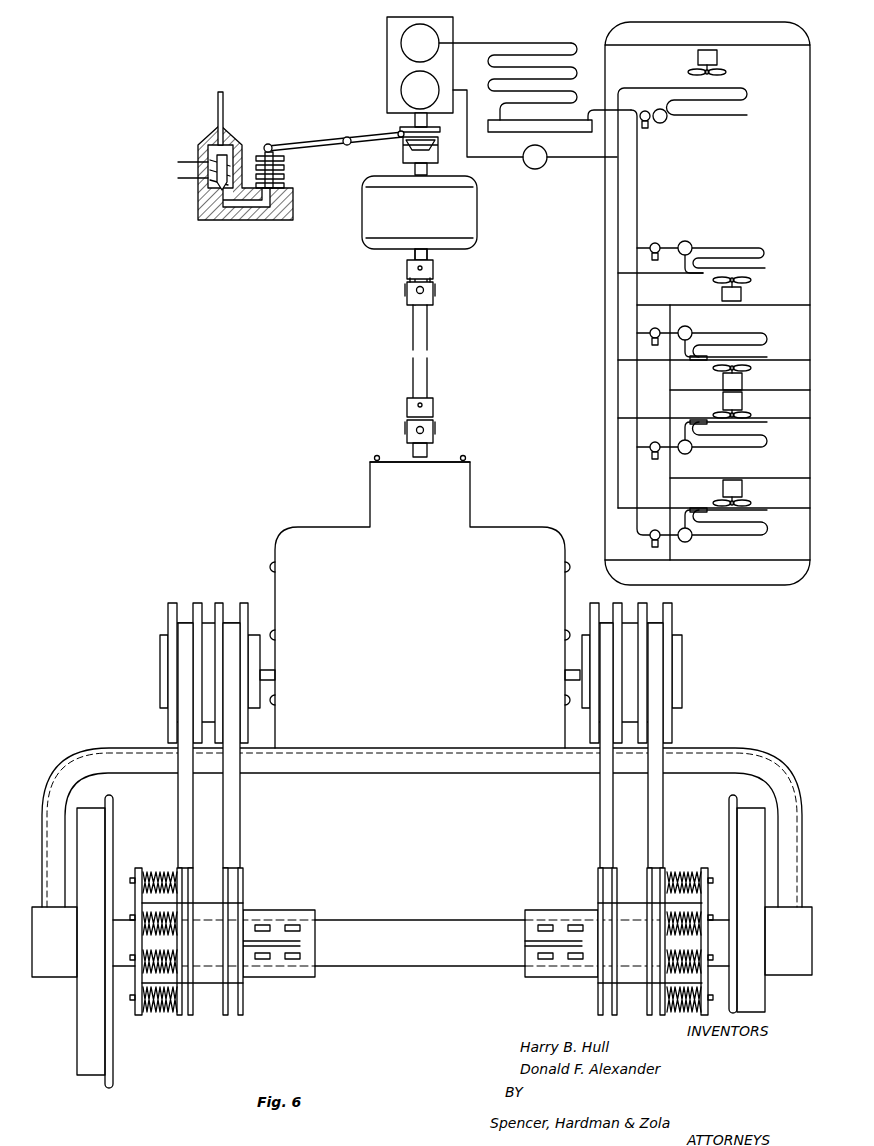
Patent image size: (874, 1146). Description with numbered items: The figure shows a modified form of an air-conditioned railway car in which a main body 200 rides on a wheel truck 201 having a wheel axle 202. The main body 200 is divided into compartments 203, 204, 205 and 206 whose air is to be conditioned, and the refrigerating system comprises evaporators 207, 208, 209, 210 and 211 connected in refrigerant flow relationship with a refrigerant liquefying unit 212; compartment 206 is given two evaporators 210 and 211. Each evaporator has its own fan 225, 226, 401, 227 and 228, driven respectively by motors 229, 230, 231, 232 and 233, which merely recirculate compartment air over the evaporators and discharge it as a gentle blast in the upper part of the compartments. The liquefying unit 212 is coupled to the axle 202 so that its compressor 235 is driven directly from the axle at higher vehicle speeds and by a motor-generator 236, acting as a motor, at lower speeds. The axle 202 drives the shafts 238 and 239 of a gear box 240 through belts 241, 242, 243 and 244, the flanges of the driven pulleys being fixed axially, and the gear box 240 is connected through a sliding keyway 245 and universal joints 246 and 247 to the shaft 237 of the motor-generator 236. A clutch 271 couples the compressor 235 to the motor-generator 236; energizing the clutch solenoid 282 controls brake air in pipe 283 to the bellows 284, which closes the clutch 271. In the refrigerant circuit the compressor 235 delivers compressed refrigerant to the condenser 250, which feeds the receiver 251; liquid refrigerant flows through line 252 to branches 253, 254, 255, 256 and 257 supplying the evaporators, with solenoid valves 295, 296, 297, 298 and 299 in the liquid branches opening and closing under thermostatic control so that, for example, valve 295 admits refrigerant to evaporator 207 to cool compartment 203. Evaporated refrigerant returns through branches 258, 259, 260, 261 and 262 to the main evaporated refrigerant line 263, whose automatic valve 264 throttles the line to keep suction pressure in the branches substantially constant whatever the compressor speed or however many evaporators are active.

The main body 200 is at (605, 300).
The wheel truck 201 is at (448, 768).
The wheel axle 202 is at (440, 912).
The compartment 203 is at (714, 503).
The compartment 204 is at (714, 418).
The compartment 205 is at (714, 432).
The compartment 206 is at (723, 245).
The evaporator 207 is at (768, 510).
The evaporator 208 is at (768, 422).
The evaporator 209 is at (755, 333).
The evaporator 210 is at (742, 247).
The evaporator 211 is at (747, 115).
The refrigerant liquefying unit 212 is at (505, 28).
The fan 225 is at (713, 503).
The fan 226 is at (713, 415).
The fan 227 is at (752, 280).
The fan 228 is at (727, 73).
The motor 229 is at (733, 482).
The motor 230 is at (723, 396).
The motor 231 is at (742, 382).
The motor 232 is at (741, 294).
The motor 233 is at (718, 57).
The compressor 235 is at (392, 70).
The motor-generator 236 is at (483, 203).
The shaft 237 is at (412, 257).
The shaft 238 is at (580, 668).
The shaft 239 is at (262, 668).
The gear box 240 is at (518, 540).
The belt 241 is at (663, 826).
The belt 242 is at (600, 826).
The belt 243 is at (240, 826).
The belt 244 is at (178, 825).
The sliding keyway 245 is at (430, 450).
The universal joint 246 is at (434, 425).
The universal joint 247 is at (434, 290).
The condenser 250 is at (562, 43).
The receiver 251 is at (583, 128).
The liquid line 252 is at (640, 185).
The branch 253 is at (645, 110).
The branch 254 is at (645, 245).
The branch 255 is at (642, 330).
The branch 256 is at (650, 446).
The branch 257 is at (650, 533).
The branch 258 is at (648, 86).
The branch 259 is at (660, 275).
The branch 260 is at (653, 362).
The branch 261 is at (653, 417).
The branch 262 is at (653, 507).
The main evaporated refrigerant line 263 is at (582, 160).
The automatic valve 264 is at (530, 166).
The clutch 271 is at (402, 142).
The clutch solenoid 282 is at (240, 160).
The pipe 283 is at (224, 110).
The bellows 284 is at (285, 172).
The solenoid valve 295 is at (655, 545).
The solenoid valve 296 is at (657, 458).
The solenoid valve 297 is at (660, 328).
The solenoid valve 298 is at (660, 243).
The solenoid valve 299 is at (650, 128).
The fan 401 is at (752, 367).